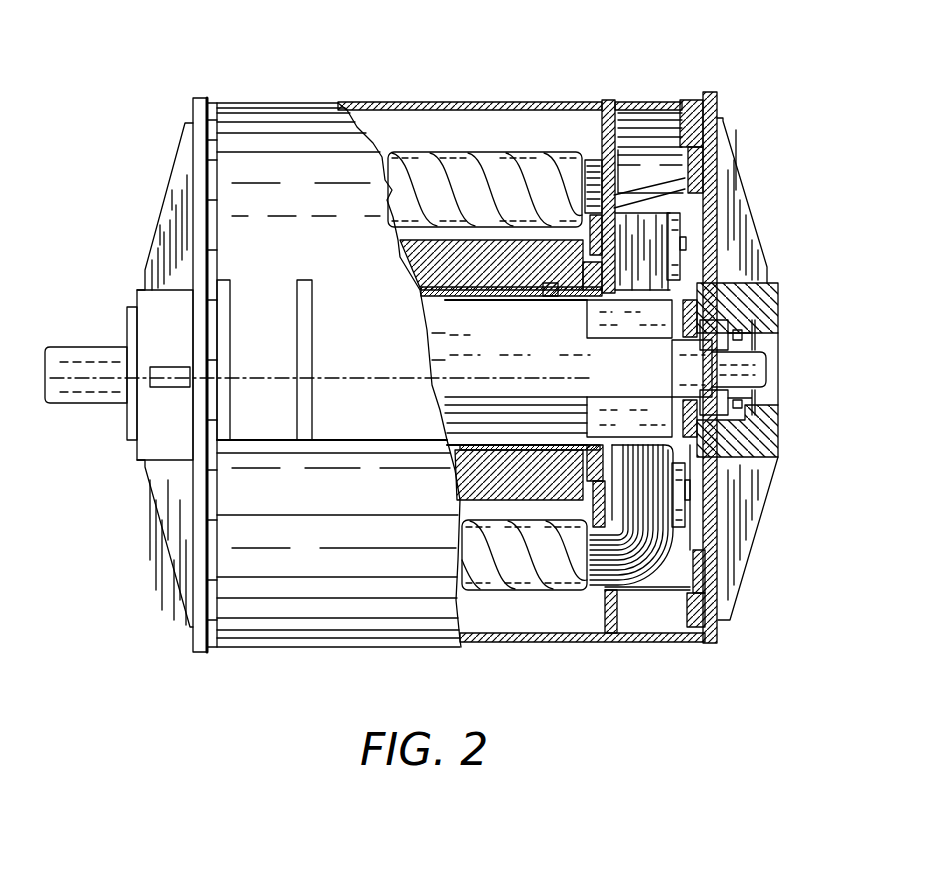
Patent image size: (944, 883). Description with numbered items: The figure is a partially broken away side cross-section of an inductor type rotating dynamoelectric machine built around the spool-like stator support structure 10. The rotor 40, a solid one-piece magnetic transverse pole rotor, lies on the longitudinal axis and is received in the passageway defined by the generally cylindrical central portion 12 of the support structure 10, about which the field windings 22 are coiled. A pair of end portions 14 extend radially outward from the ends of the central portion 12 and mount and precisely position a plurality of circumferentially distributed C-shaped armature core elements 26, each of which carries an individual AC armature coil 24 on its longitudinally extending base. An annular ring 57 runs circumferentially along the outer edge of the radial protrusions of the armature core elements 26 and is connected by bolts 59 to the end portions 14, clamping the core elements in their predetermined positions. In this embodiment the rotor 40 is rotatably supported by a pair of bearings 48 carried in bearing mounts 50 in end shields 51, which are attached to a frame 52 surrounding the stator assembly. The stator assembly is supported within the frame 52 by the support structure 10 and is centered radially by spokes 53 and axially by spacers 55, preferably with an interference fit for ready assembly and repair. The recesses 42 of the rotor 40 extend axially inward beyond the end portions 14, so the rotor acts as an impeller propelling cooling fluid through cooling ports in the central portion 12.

The spool-like support structure 10 is at (633, 128).
The central portion 12 is at (558, 297).
The end portions 14 is at (613, 203).
The field windings 22 is at (470, 467).
The AC armature coil 24 is at (540, 577).
The armature core elements 26 is at (638, 567).
The rotor 40 is at (450, 336).
The recesses 42 is at (605, 417).
The bearings 48 is at (743, 338).
The bearing mounts 50 is at (775, 305).
The end shields 51 is at (165, 245).
The frame 52 is at (230, 530).
The spokes 53 is at (610, 105).
The spacers 55 is at (641, 165).
The annular ring 57 is at (680, 223).
The bolts 59 is at (687, 243).